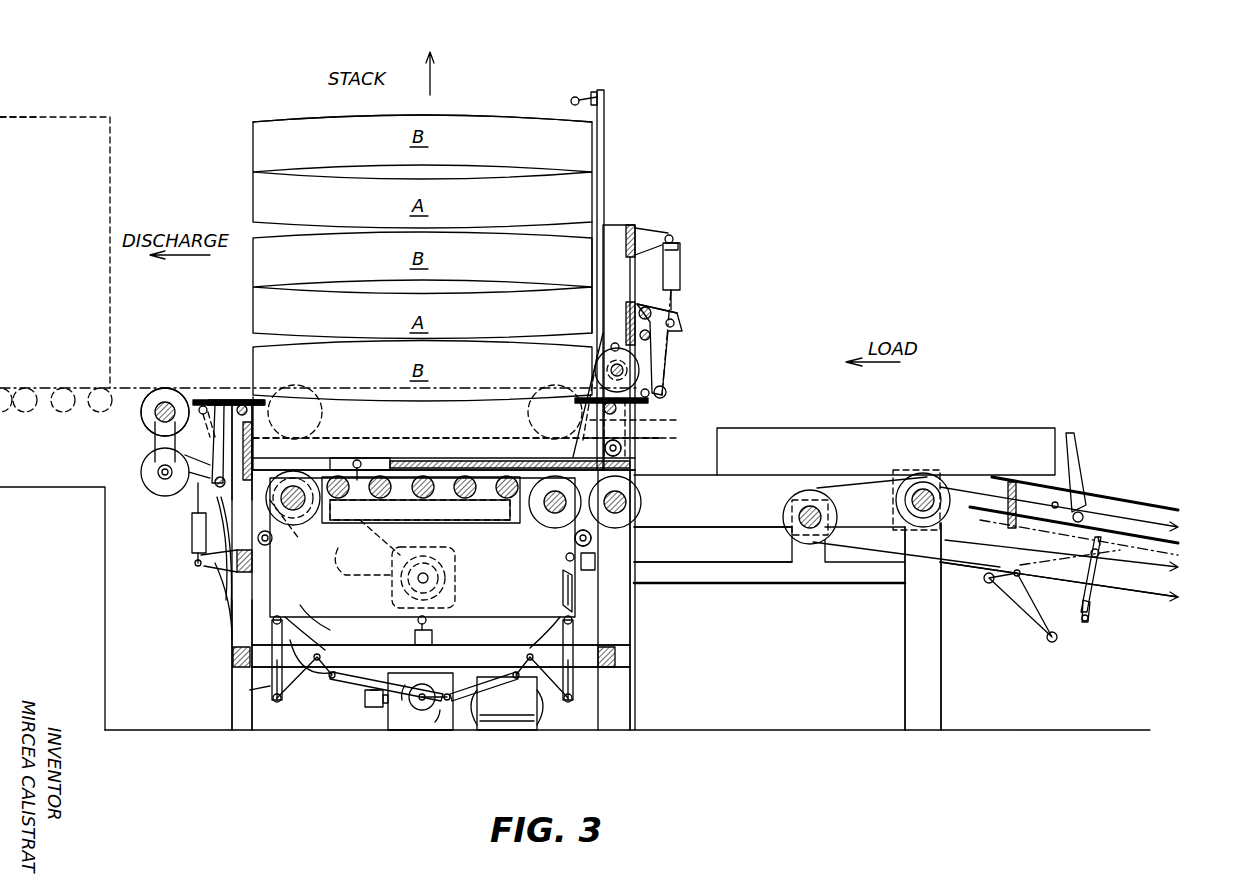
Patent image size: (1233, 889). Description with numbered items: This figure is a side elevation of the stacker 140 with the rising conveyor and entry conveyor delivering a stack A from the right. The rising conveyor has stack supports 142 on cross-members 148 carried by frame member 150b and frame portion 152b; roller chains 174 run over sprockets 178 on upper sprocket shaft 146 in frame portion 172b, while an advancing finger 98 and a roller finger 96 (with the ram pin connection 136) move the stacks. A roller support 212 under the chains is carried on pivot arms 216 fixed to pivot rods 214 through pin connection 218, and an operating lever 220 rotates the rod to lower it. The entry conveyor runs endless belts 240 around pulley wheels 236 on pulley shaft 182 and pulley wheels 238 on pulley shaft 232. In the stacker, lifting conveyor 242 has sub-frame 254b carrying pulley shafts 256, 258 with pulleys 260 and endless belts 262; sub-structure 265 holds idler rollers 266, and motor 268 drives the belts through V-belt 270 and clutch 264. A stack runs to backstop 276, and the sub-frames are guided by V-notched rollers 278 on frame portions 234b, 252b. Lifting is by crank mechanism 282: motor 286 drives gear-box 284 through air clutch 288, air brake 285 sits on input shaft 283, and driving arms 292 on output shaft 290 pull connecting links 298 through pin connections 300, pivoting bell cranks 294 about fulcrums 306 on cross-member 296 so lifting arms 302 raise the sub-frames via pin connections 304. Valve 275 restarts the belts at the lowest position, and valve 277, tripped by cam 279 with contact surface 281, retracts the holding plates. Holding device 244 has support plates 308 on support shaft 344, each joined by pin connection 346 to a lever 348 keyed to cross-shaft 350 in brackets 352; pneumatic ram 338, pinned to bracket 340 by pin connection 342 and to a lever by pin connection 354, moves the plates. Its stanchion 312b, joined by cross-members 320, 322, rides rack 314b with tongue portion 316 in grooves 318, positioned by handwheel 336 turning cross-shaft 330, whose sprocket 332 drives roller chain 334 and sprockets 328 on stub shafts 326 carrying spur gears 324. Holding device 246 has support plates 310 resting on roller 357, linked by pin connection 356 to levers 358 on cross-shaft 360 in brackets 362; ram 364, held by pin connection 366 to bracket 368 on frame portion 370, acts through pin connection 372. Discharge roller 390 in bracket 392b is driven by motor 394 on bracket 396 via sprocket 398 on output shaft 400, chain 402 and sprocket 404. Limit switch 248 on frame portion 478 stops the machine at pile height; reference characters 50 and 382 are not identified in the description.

The discharge conveyor 50 is at (17, 308).
The stacker 140 is at (524, 106).
The limit switch 248 is at (576, 97).
The frame portion 478 is at (606, 100).
The upright stanchion 312b is at (596, 222).
The bracket 340 is at (648, 228).
The pin connection 342 is at (671, 236).
The cross-member 320 is at (626, 240).
The pneumatic ram 338 is at (680, 260).
The cross-member 322 is at (626, 310).
The brackets 352 is at (665, 290).
The cross-shaft 350 is at (652, 312).
The sprocket 332 is at (598, 325).
The cross-shaft 330 is at (598, 345).
The pin connection 354 is at (675, 323).
The lever 348 is at (672, 330).
The pin 382 is at (651, 338).
The holding device 244 is at (732, 380).
The handwheel 336 is at (610, 366).
The spur gears 324 is at (575, 395).
The support shaft 344 is at (650, 393).
The pin connection 346 is at (667, 395).
The support plates 308 is at (652, 402).
The roller chain 334 is at (650, 421).
The sprockets 328 is at (622, 446).
The tongue portion 316 is at (467, 462).
The holding device 246 is at (185, 352).
The pin connection 356 is at (222, 399).
The discharge roller 390 is at (155, 408).
The bracket 392b is at (202, 406).
The roller 357 is at (246, 405).
The sprocket 404 is at (157, 415).
The chain 402 is at (152, 428).
The lever 358 is at (156, 447).
The output shaft 400 is at (158, 474).
The sprocket 398 is at (150, 478).
The motor 394 is at (155, 496).
The bracket 396 is at (196, 470).
The support plates 310 is at (262, 416).
The backstop 276 is at (252, 456).
The pin connection 372 is at (195, 488).
The cross-shaft 360 is at (194, 522).
The brackets 362 is at (195, 566).
The ram 364 is at (204, 570).
The pin connection 366 is at (224, 590).
The bracket 368 is at (228, 610).
The frame portion 370 is at (232, 640).
The pulley shaft 258 is at (296, 490).
The clutch 264 is at (346, 465).
The spur toothed rack 314b is at (450, 458).
The grooves 318 is at (488, 461).
The stub shafts 326 is at (605, 448).
The idler rollers 266 is at (432, 496).
The V-notched rollers 278 is at (372, 505).
The pulley shaft 232 is at (632, 502).
The pulley wheels 238 is at (640, 510).
The pulley shaft 256 is at (555, 515).
The pulleys 260 is at (270, 542).
The sub-structure 265 is at (335, 552).
The V-belt 270 is at (367, 556).
The endless belts 262 is at (412, 555).
The lifting conveyor 242 is at (483, 545).
The motor 268 is at (456, 570).
The valve 277 is at (596, 562).
The contact surface 281 is at (573, 587).
The cam 279 is at (573, 605).
The pin connections 304 is at (276, 620).
The fulcrums 306 is at (636, 642).
The sub-frame 254b is at (320, 630).
The cross-member 296 is at (441, 643).
The valve 275 is at (430, 635).
The connecting links 298 is at (350, 678).
The air clutch 288 is at (447, 686).
The pin connections 300 is at (218, 720).
The lifting arms 302 is at (270, 686).
The bell crank 294 is at (290, 700).
The input shaft 283 is at (366, 700).
The air brake 285 is at (374, 708).
The output shaft 290 is at (418, 708).
The driving arms 292 is at (430, 712).
The gear-box 284 is at (452, 702).
The crank mechanism 282 is at (403, 770).
The motor 286 is at (520, 707).
The frame portion 234b is at (636, 712).
The frame portion 252b is at (232, 735).
The endless belts 240 is at (734, 527).
The upper sprocket shaft 146 is at (808, 505).
The sprockets 178 is at (838, 518).
The pulley wheels 236 is at (898, 478).
The pulley shaft 182 is at (928, 496).
The cross-members 148 is at (1030, 468).
The advancing finger 98 is at (1076, 438).
The pin connection 218 is at (1100, 540).
The stack supports 142 is at (1165, 506).
The frame member 150b is at (1172, 548).
The frame portion 172b is at (833, 588).
The roller chains 174 is at (958, 568).
The pivot arms 216 is at (1085, 575).
The pivot rods 214 is at (1100, 580).
The roller support 212 is at (1148, 578).
The roller finger 96 is at (1009, 620).
The pin connection 136 is at (1048, 643).
The operating lever 220 is at (1085, 624).
The frame portion 152b is at (944, 692).
The stack A is at (802, 456).